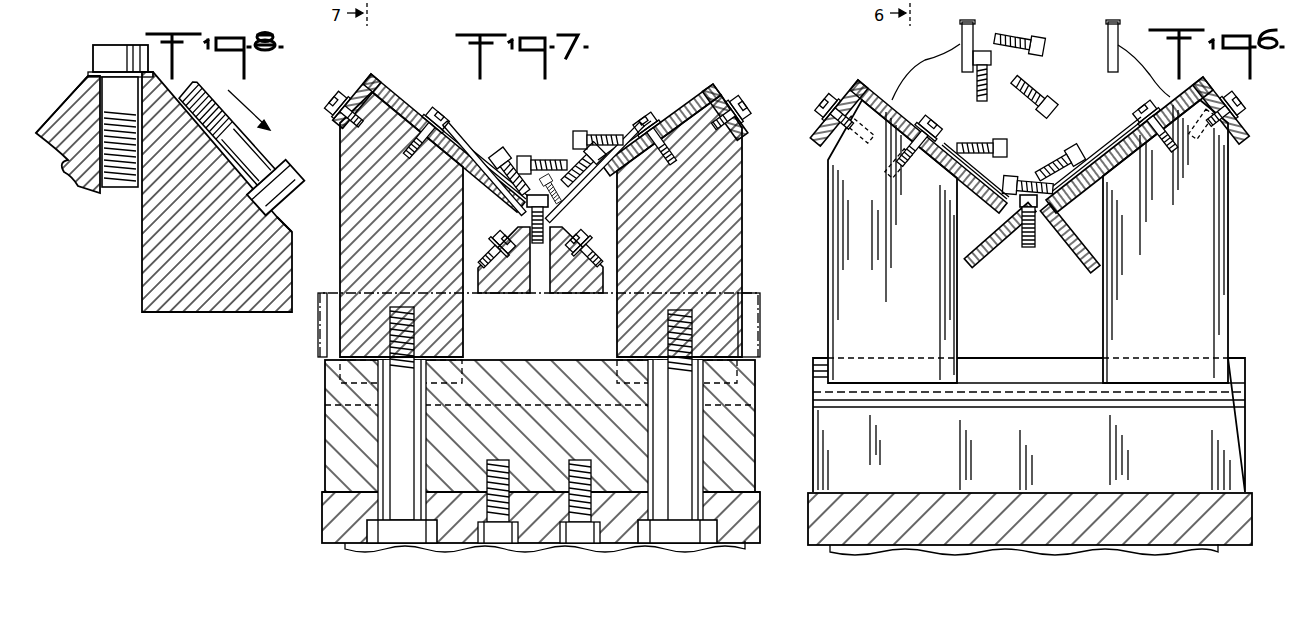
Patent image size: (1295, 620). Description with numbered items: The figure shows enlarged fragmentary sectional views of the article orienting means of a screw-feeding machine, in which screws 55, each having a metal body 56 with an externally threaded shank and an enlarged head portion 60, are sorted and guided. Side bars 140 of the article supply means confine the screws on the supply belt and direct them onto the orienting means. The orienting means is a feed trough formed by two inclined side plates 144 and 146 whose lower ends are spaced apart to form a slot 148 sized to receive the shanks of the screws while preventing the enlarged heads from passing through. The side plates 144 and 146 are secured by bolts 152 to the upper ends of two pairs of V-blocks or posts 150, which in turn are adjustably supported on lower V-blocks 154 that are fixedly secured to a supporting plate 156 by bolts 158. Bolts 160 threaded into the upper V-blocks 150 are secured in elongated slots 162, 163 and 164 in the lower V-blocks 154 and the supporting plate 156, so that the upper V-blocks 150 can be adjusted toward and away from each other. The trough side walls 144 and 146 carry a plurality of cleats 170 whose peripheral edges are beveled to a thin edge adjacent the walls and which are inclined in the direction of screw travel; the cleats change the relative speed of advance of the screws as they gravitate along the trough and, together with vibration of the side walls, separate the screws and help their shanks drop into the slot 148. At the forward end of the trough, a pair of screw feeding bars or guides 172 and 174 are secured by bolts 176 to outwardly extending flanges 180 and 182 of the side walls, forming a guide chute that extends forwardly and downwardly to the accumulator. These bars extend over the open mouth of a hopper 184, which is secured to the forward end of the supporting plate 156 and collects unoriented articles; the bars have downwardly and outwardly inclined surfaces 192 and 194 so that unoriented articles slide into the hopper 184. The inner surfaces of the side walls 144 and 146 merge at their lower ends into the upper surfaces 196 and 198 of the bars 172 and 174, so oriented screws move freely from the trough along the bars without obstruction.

In FIG. 7, the screw 55 is at (592, 131).
In FIG. 6, the screw 55 is at (1066, 98).
In FIG. 8, the metal body 56 is at (119, 188).
In FIG. 8, the head portion 60 is at (107, 44).
In FIG. 7, the head portion 60 is at (547, 173).
In FIG. 6, the head portion 60 is at (1028, 195).
In FIG. 6, the side bars 140 is at (1106, 32).
In FIG. 7, the inclined side plate 144 is at (388, 86).
In FIG. 6, the inclined side plate 144 is at (877, 66).
In FIG. 7, the inclined side plate 146 is at (700, 100).
In FIG. 6, the inclined side plate 146 is at (1190, 100).
In FIG. 6, the slot 148 is at (1015, 243).
In FIG. 7, the V-blocks or posts 150 is at (363, 258).
In FIG. 6, the V-blocks or posts 150 is at (853, 263).
In FIG. 7, the bolts 152 is at (347, 87).
In FIG. 6, the bolts 152 is at (832, 98).
In FIG. 7, the V-blocks 154 is at (348, 442).
In FIG. 6, the V-blocks 154 is at (1047, 338).
In FIG. 7, the supporting plate 156 is at (323, 542).
In FIG. 6, the supporting plate 156 is at (845, 523).
In FIG. 7, the bolts 158 is at (496, 460).
In FIG. 7, the bolts 160 is at (400, 422).
In FIG. 7, the elongated slot 162 is at (422, 447).
In FIG. 7, the elongated slot 163 is at (377, 507).
In FIG. 7, the elongated slot 164 is at (363, 538).
In FIG. 7, the cleats 170 is at (440, 122).
In FIG. 6, the cleats 170 is at (953, 140).
In FIG. 8, the screw feeding bar or guide 172 is at (80, 148).
In FIG. 7, the screw feeding bar or guide 172 is at (490, 293).
In FIG. 8, the screw feeding bar or guide 174 is at (222, 298).
In FIG. 7, the screw feeding bar or guide 174 is at (553, 293).
In FIG. 7, the bolts 176 is at (487, 248).
In FIG. 7, the flange 180 is at (500, 222).
In FIG. 7, the flange 182 is at (575, 219).
In FIG. 7, the hopper 184 is at (262, 4).
In FIG. 8, the inclined surface 192 is at (50, 110).
In FIG. 8, the inclined surface 194 is at (279, 219).
In FIG. 8, the upper surface 196 is at (88, 74).
In FIG. 8, the upper surface 198 is at (152, 72).